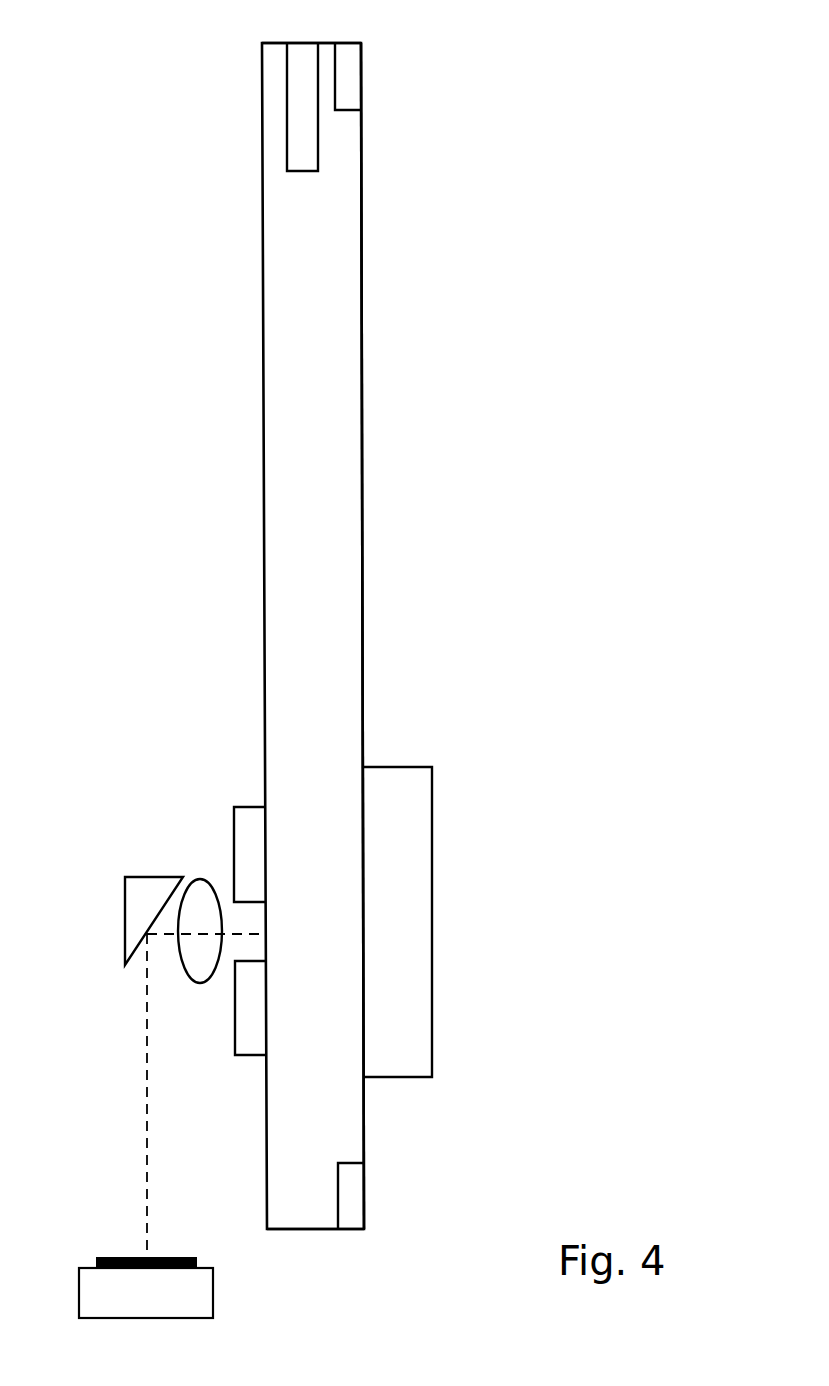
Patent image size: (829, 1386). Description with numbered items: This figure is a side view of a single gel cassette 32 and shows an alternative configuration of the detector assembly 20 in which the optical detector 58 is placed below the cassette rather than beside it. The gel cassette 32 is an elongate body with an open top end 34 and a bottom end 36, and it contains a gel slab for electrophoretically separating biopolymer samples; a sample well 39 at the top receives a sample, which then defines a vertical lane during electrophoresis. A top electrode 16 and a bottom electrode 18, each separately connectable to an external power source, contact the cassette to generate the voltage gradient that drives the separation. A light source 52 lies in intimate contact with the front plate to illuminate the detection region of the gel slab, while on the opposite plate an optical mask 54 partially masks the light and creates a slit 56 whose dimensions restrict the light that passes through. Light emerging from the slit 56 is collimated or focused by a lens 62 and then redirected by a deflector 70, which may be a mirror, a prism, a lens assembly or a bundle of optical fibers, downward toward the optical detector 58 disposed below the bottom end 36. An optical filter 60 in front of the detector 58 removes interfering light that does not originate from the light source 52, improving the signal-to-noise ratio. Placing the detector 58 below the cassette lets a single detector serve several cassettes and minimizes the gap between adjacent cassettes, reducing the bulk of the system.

The top electrode 16 is at (362, 72).
The bottom electrode 18 is at (352, 1188).
The detector assembly 20 is at (457, 579).
The gel cassette 32 is at (363, 330).
The open top end 34 is at (300, 55).
The bottom end 36 is at (300, 1219).
The sample well 39 is at (326, 52).
The light source 52 is at (421, 785).
The optical mask 54 is at (244, 815).
The slit 56 is at (253, 942).
The optical detector 58 is at (150, 1283).
The optical filter 60 is at (118, 1257).
The lens 62 is at (200, 886).
The deflector 70 is at (145, 898).